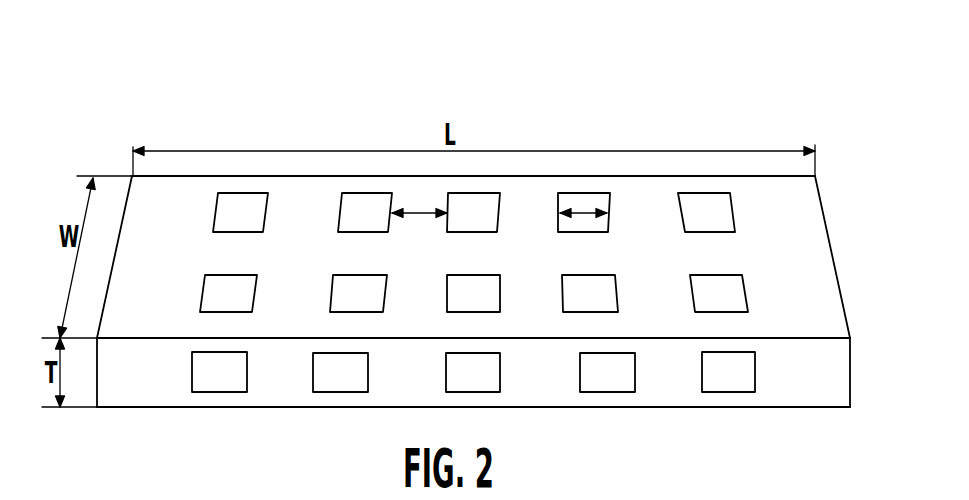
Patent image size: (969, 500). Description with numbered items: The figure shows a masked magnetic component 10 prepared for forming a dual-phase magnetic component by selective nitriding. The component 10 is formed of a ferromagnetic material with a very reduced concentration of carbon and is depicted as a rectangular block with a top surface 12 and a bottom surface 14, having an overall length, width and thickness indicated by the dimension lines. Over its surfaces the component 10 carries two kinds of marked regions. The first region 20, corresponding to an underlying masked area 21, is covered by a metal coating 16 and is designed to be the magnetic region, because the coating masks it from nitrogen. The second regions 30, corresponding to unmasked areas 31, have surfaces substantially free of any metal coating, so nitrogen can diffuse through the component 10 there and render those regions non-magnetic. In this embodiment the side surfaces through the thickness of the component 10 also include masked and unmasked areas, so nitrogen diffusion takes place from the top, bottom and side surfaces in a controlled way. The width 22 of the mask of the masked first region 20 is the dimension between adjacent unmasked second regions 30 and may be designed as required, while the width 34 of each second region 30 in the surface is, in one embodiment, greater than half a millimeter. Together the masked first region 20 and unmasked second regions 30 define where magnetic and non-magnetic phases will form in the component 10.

The magnetic component 10 is at (782, 97).
The top surface 12 is at (798, 235).
The bottom surface 14 is at (757, 407).
The metal coating 16 is at (170, 192).
The first region 20 is at (295, 222).
The masked area 21 is at (316, 188).
The width of the mask 22 is at (425, 214).
The second region 30 is at (740, 370).
The unmasked area 31 is at (700, 205).
The width of the second region 34 is at (585, 214).